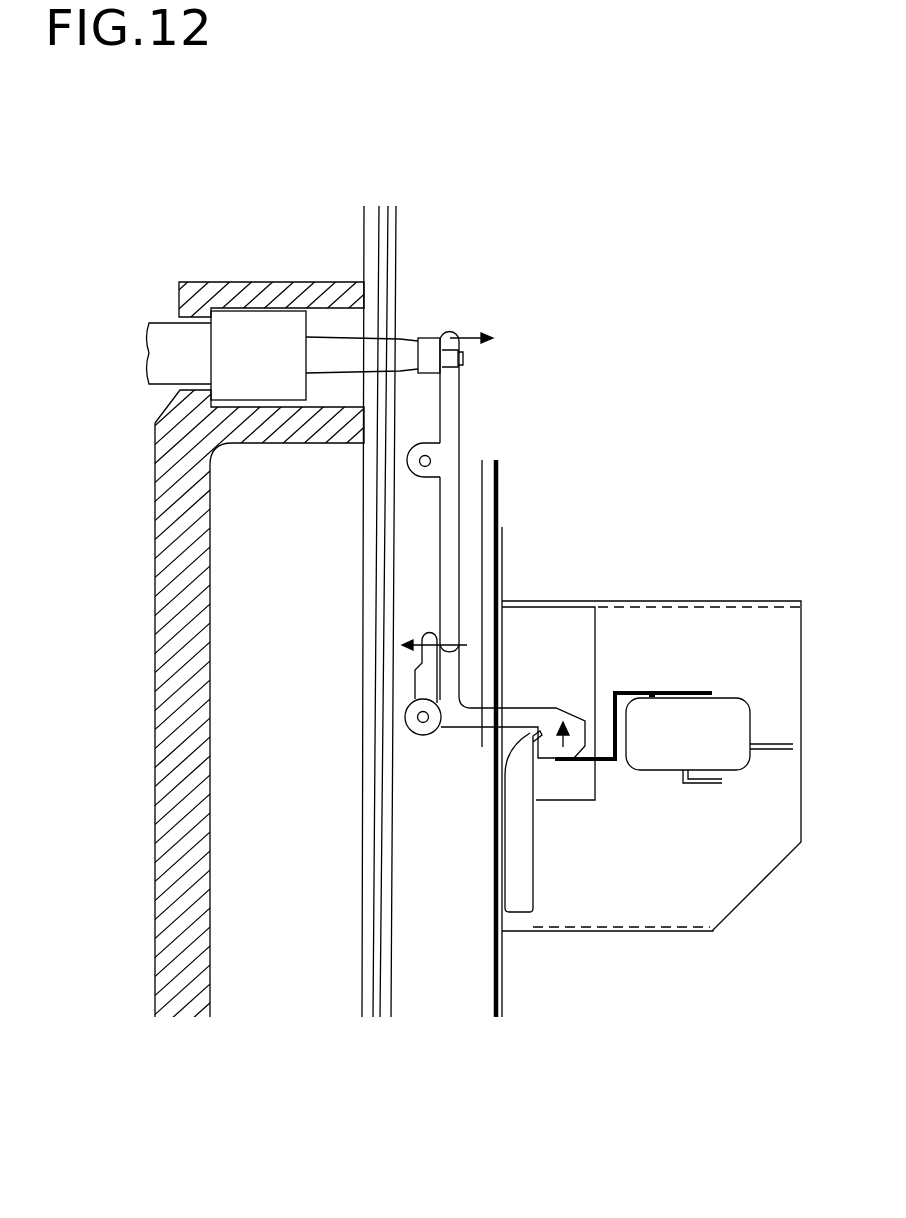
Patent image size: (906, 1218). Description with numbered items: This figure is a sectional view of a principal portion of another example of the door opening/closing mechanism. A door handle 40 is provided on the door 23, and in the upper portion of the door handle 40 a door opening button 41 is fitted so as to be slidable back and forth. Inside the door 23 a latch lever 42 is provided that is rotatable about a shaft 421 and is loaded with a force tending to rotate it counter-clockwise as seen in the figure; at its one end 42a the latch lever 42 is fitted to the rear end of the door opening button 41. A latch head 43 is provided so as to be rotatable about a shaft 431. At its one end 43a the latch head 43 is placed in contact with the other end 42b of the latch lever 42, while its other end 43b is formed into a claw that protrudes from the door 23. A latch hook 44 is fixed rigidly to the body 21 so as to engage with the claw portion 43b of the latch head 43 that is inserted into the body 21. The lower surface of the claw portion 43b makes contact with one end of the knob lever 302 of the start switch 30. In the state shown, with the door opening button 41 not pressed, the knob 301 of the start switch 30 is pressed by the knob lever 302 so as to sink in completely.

The body 21 is at (492, 970).
The door 23 is at (364, 243).
The start switch 30 is at (651, 719).
The knob 301 is at (652, 702).
The knob lever 302 is at (608, 768).
The door handle 40 is at (228, 282).
The door opening button 41 is at (147, 360).
The latch lever 42 is at (443, 453).
The one end of the latch lever 42a is at (449, 331).
The other end of the latch lever 42b is at (447, 622).
The shaft 421 is at (431, 459).
The latch head 43 is at (483, 650).
The one end of the latch head 43a is at (428, 657).
The claw portion 43b is at (560, 723).
The shaft 431 is at (412, 723).
The latch hook 44 is at (530, 771).